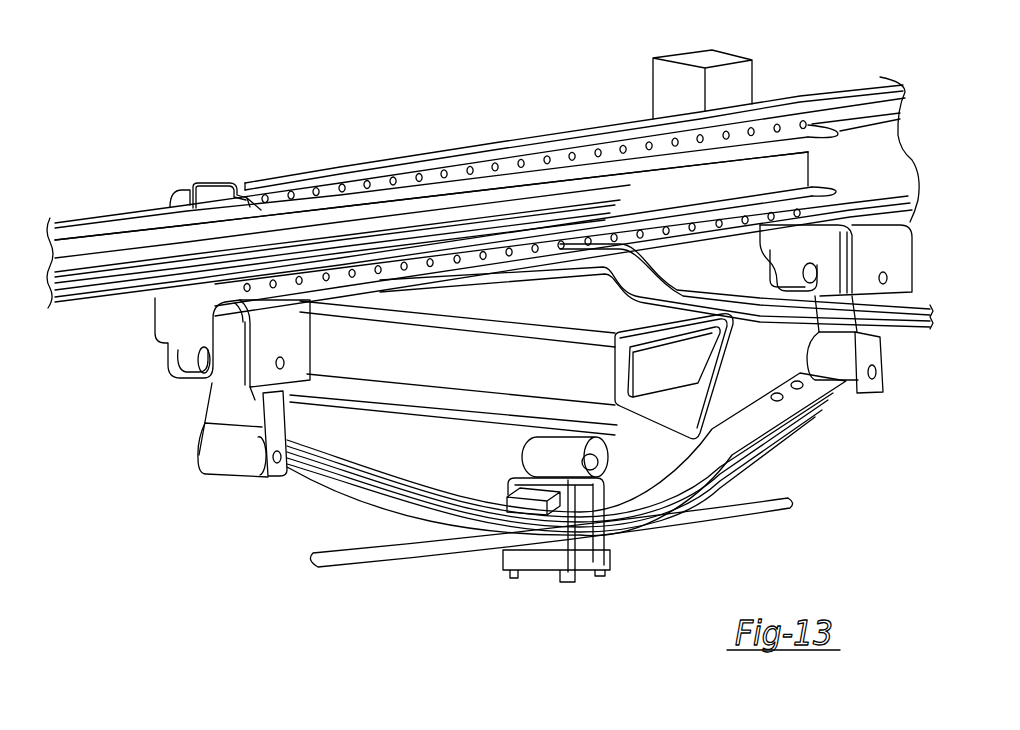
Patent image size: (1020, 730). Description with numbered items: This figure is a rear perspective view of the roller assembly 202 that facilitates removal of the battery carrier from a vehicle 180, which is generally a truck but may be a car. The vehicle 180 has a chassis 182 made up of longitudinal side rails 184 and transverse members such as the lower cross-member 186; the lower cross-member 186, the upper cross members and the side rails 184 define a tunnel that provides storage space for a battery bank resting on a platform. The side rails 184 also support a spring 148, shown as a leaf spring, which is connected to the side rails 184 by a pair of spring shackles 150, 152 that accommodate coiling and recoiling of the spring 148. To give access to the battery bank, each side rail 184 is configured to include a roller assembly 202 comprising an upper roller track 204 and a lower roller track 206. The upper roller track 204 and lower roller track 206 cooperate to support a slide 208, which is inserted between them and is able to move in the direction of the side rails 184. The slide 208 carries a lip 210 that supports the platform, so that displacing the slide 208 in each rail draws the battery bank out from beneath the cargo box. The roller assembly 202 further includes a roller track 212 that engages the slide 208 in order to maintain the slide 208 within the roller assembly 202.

The spring 148 is at (774, 437).
The spring shackle 150 is at (170, 313).
The spring shackle 152 is at (897, 253).
The vehicle 180 is at (197, 119).
The chassis 182 is at (779, 97).
The side rail 184 is at (322, 158).
The lower cross-member 186 is at (886, 322).
The roller assembly 202 is at (436, 170).
The upper roller track 204 is at (486, 168).
The lower roller track 206 is at (736, 220).
The slide 208 is at (96, 233).
The lip 210 is at (165, 250).
The roller track 212 is at (584, 170).